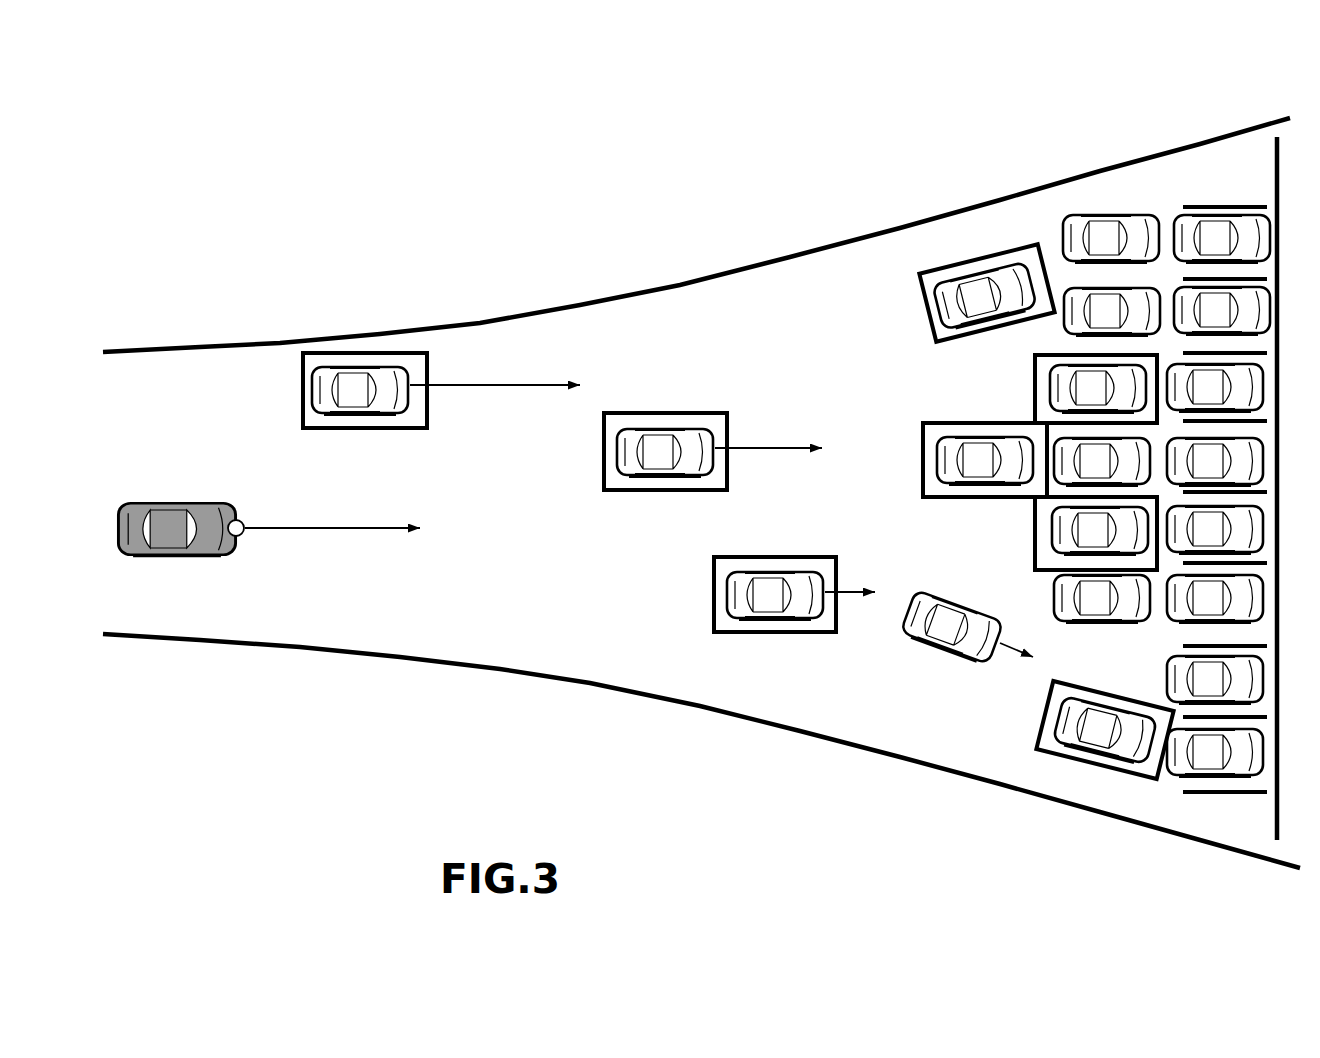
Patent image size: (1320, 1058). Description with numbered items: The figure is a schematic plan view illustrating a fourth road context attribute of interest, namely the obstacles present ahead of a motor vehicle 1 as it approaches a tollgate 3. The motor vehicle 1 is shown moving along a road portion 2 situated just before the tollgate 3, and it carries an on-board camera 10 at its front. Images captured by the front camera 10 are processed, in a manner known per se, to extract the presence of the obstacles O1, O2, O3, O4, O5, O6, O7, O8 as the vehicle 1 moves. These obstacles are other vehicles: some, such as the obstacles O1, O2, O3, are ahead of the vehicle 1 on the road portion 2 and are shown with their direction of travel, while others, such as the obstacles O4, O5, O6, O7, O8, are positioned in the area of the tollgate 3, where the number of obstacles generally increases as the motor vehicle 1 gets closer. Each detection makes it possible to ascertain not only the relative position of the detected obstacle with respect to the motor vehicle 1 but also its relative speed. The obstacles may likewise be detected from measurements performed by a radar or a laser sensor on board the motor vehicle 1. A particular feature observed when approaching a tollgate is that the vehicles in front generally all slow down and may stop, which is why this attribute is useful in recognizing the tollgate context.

The motor vehicle 1 is at (175, 543).
The camera 10 is at (237, 535).
The road portion 2 is at (612, 298).
The tollgate 3 is at (1263, 173).
The obstacle O1 is at (412, 417).
The obstacle O2 is at (636, 490).
The obstacle O3 is at (790, 632).
The obstacle O4 is at (930, 487).
The obstacle O5 is at (1052, 727).
The obstacle O6 is at (922, 291).
The obstacle O7 is at (1043, 377).
The obstacle O8 is at (1045, 530).